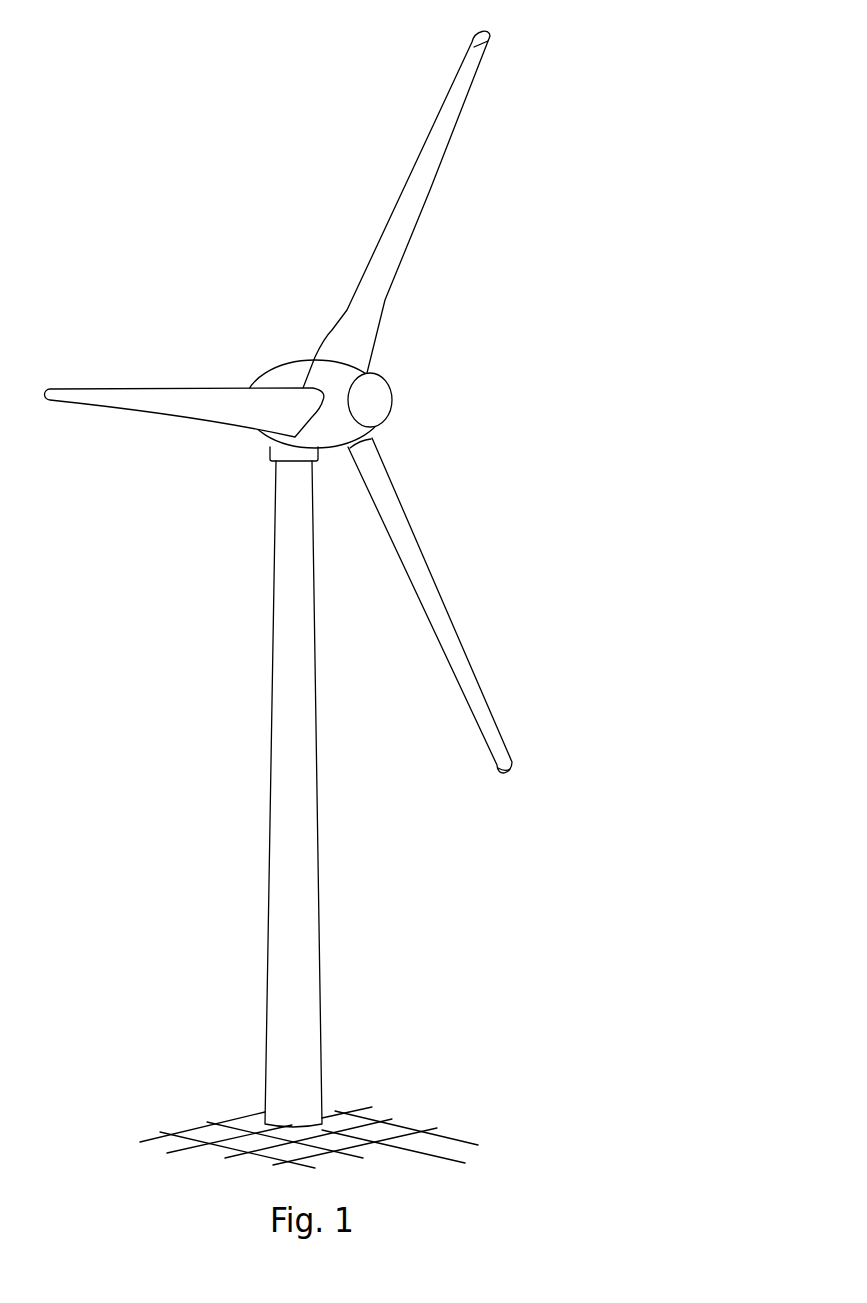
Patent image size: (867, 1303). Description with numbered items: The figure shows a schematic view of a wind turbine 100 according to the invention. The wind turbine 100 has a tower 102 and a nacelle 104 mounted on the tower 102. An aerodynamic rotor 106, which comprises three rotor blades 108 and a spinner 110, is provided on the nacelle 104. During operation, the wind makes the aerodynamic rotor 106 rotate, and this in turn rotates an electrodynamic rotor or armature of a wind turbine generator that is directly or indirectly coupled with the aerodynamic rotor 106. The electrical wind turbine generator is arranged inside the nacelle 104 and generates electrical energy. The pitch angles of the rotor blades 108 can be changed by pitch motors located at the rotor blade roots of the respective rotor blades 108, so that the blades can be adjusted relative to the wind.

The wind turbine 100 is at (322, 579).
The tower 102 is at (305, 869).
The nacelle 104 is at (288, 380).
The aerodynamic rotor 106 is at (322, 402).
The rotor blades 108 is at (428, 165).
The spinner 110 is at (375, 400).